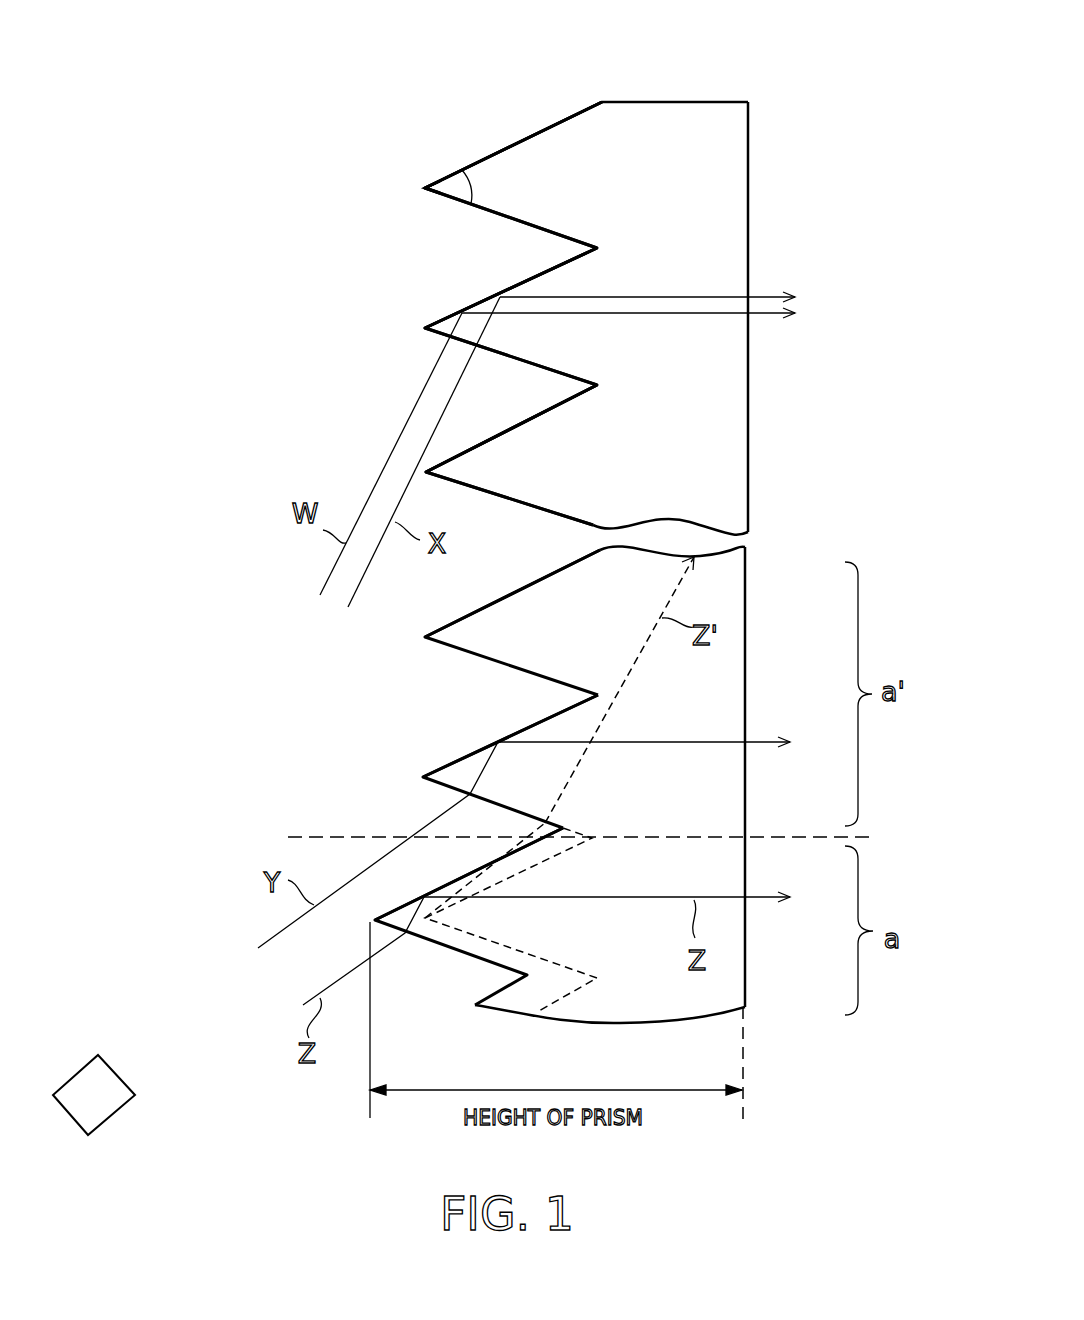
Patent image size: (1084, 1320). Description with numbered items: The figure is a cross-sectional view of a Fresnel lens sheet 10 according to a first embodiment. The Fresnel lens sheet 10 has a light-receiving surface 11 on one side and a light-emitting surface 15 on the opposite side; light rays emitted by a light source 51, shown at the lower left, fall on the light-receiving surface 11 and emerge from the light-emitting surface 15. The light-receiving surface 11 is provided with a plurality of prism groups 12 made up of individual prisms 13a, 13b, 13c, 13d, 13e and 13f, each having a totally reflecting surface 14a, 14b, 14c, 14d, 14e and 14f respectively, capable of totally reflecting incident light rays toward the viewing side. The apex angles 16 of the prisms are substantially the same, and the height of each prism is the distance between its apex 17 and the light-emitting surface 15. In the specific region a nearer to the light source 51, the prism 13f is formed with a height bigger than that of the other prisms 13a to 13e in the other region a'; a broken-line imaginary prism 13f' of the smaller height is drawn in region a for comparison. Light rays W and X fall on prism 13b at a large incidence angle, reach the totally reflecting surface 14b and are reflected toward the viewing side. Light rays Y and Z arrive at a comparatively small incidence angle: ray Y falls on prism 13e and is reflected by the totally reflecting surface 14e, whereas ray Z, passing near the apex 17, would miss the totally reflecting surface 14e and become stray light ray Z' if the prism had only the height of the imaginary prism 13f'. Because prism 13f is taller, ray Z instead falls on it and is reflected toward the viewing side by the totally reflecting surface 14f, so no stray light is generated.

The Fresnel lens sheet 10 is at (412, 100).
The light-receiving surface 11 is at (258, 180).
The prism groups 12 is at (345, 175).
The prism 13a is at (560, 128).
The prism 13b is at (590, 256).
The prism 13c is at (574, 404).
The prism 13d is at (548, 575).
The prism 13e is at (596, 706).
The prism 13f is at (506, 916).
The imaginary prism 13f' is at (515, 920).
The totally reflecting surface 14a is at (517, 146).
The totally reflecting surface 14b is at (536, 280).
The totally reflecting surface 14c is at (517, 428).
The totally reflecting surface 14d is at (510, 596).
The totally reflecting surface 14e is at (538, 728).
The totally reflecting surface 14f is at (466, 876).
The light-emitting surface 15 is at (774, 203).
The apex angle 16 is at (468, 203).
The apex 17 is at (425, 190).
The light source 51 is at (112, 1100).